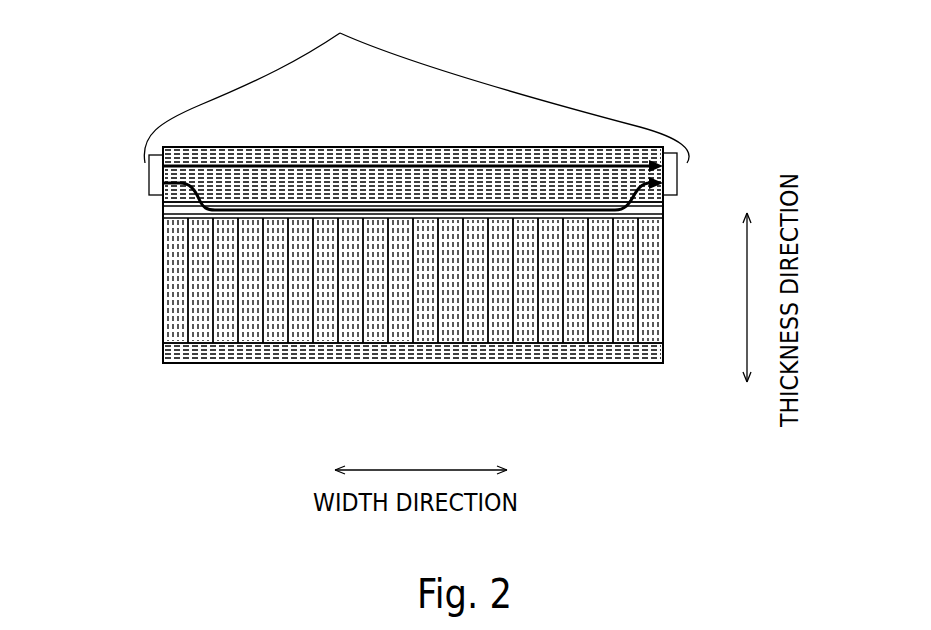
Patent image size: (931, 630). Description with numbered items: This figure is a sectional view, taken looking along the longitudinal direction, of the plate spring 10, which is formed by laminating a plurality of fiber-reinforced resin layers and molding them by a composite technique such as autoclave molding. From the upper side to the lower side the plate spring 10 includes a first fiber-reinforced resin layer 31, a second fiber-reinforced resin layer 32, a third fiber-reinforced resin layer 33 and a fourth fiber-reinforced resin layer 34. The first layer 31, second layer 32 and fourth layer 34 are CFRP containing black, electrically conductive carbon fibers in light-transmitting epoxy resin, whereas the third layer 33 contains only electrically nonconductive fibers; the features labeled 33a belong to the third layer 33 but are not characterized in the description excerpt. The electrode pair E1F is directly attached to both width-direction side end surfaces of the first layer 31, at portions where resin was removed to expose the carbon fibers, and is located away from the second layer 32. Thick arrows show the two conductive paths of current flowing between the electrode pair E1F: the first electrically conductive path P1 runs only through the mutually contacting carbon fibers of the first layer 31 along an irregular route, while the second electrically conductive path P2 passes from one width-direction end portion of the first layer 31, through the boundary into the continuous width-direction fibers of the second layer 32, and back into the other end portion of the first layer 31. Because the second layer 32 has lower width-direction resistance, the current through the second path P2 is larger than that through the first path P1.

The plate spring 10 is at (630, 375).
The first fiber-reinforced resin layer 31 is at (305, 157).
The second fiber-reinforced resin layer 32 is at (163, 212).
The third fiber-reinforced resin layer 33 is at (367, 325).
The grooves 33a is at (428, 343).
The fourth fiber-reinforced resin layer 34 is at (163, 350).
The first electrically conductive path P1 is at (368, 165).
The second electrically conductive path P2 is at (418, 209).
The electrode pair E1F is at (416, 82).